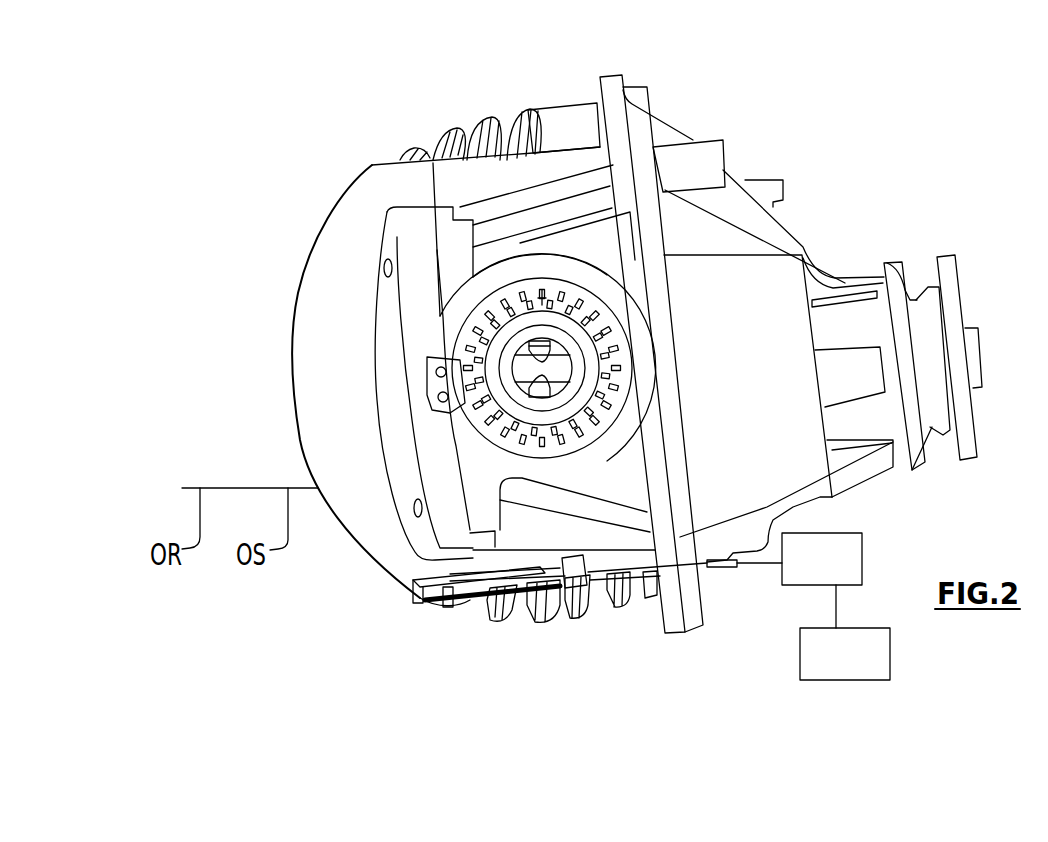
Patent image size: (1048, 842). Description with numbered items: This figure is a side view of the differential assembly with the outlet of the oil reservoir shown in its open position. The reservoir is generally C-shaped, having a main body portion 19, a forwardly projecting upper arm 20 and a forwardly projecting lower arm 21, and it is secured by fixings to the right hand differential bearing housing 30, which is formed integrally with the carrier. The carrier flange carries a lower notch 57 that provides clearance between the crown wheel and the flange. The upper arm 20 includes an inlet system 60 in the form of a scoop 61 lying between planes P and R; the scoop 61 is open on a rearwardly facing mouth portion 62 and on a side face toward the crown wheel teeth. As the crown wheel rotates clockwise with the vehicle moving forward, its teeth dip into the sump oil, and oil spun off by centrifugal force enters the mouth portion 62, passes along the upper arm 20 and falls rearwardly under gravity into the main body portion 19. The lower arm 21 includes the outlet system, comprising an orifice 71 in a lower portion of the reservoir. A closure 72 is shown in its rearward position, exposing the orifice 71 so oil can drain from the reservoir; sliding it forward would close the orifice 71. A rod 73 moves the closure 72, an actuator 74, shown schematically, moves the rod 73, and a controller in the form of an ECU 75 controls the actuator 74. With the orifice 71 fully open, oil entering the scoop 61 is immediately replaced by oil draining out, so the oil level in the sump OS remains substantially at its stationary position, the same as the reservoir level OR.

The main body portion 19 is at (307, 342).
The upper arm 20 is at (441, 160).
The lower arm 21 is at (600, 612).
The differential bearing housing 30 is at (522, 243).
The lower notch 57 is at (650, 628).
The inlet system 60 is at (547, 103).
The scoop 61 is at (553, 130).
The mouth portion 62 is at (500, 118).
The orifice 71 is at (537, 610).
The closure 72 is at (430, 610).
The rod 73 is at (753, 566).
The actuator 74 is at (822, 559).
The ECU 75 is at (845, 654).